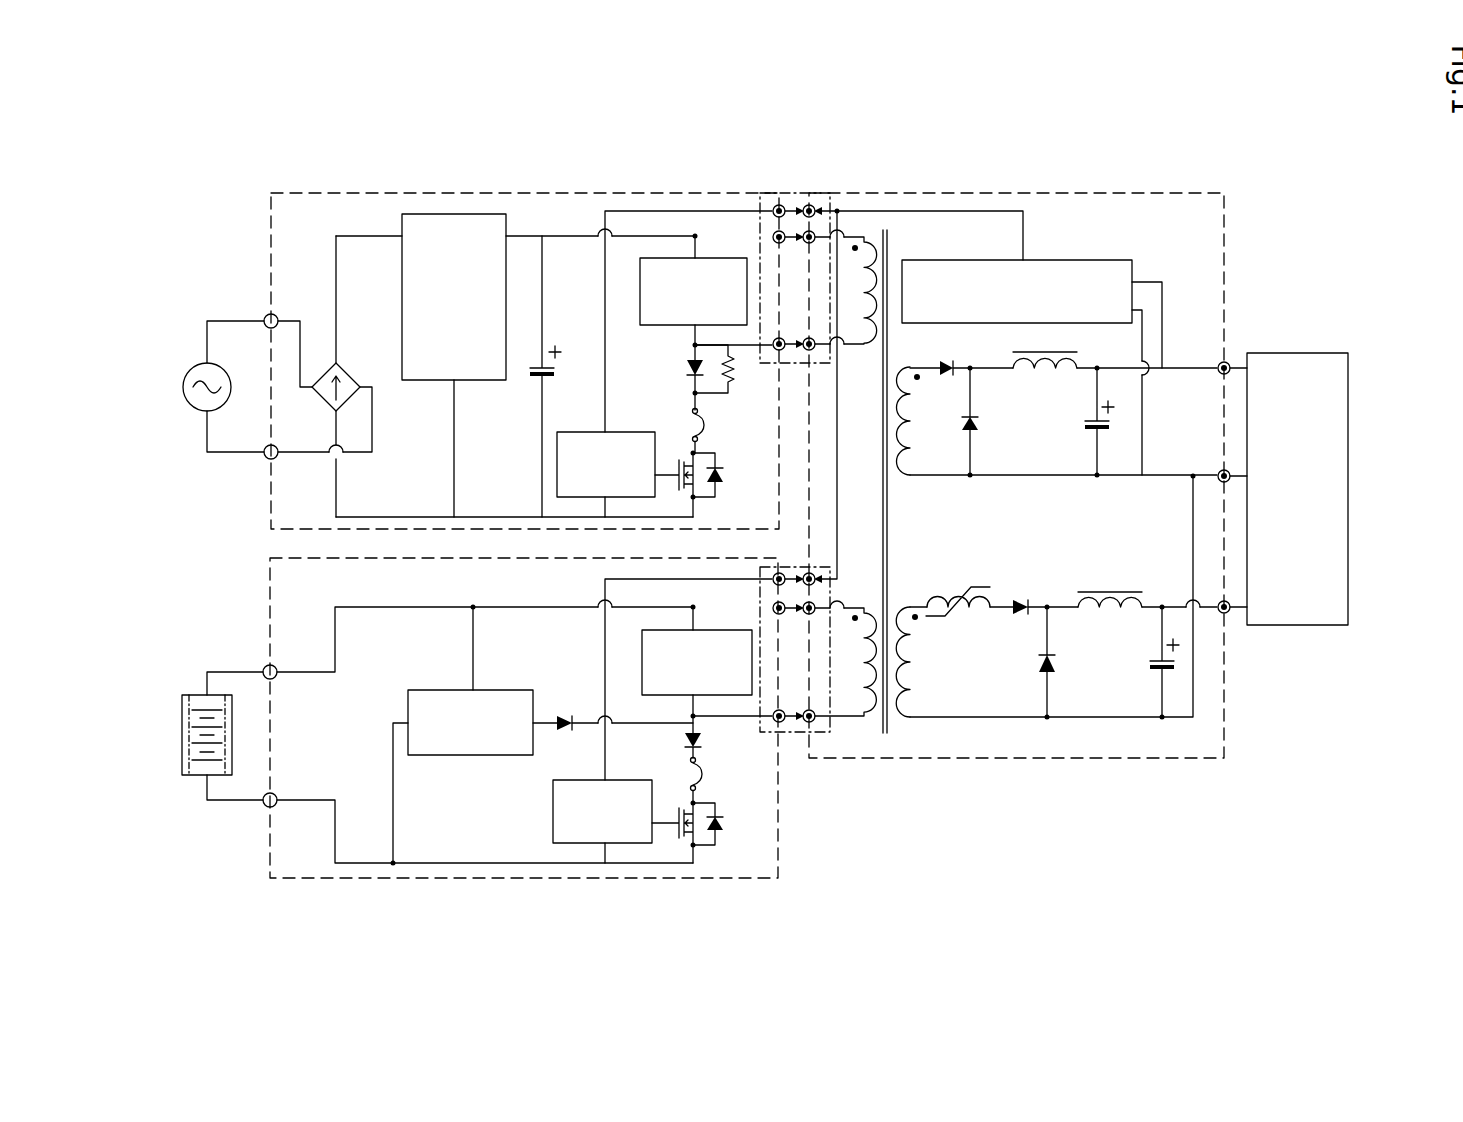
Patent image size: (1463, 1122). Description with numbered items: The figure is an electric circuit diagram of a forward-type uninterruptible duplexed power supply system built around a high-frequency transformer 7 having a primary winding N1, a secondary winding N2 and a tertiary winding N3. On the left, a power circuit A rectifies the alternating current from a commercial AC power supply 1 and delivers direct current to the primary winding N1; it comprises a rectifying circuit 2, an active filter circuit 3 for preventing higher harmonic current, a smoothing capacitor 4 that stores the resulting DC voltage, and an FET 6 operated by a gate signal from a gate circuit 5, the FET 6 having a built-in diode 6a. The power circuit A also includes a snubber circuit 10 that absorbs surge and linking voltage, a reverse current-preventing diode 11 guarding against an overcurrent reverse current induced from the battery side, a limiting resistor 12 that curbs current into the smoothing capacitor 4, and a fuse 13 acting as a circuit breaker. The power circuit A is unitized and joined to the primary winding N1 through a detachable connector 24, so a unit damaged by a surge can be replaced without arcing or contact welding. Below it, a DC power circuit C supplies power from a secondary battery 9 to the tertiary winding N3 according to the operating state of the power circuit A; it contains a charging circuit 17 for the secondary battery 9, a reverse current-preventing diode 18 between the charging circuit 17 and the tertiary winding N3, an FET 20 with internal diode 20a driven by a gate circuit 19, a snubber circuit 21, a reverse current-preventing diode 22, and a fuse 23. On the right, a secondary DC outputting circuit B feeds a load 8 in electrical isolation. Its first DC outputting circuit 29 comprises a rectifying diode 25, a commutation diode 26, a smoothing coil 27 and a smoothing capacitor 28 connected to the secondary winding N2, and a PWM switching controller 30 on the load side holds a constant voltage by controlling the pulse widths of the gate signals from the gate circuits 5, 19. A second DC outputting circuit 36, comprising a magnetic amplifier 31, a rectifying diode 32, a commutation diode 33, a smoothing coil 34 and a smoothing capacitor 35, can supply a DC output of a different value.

The commercial AC power supply 1 is at (200, 366).
The rectifying circuit 2 is at (345, 378).
The active filter circuit 3 is at (483, 380).
The smoothing capacitor 4 is at (556, 376).
The gate circuit 5 is at (622, 432).
The FET 6 is at (675, 454).
The built-in diode of the FET 6a is at (722, 481).
The high-frequency transformer 7 is at (908, 240).
The load 8 is at (1347, 398).
The secondary battery 9 is at (193, 679).
The snubber circuit 10 is at (712, 258).
The reverse current-preventing diode 11 is at (686, 360).
The limiting resistor 12 is at (736, 368).
The fuse 13 is at (700, 427).
The charging circuit 17 is at (417, 695).
The reverse current-preventing diode 18 is at (570, 714).
The gate circuit 19 is at (553, 810).
The FET 20 is at (668, 796).
The internal diode of the FET 20a is at (722, 828).
The snubber circuit 21 is at (641, 676).
The reverse current-preventing diode 22 is at (702, 740).
The fuse 23 is at (698, 775).
The connector 24 is at (798, 196).
The rectifying diode 25 is at (946, 373).
The commutation diode 26 is at (976, 425).
The smoothing coil 27 is at (1049, 381).
The smoothing capacitor 28 is at (1110, 431).
The first DC outputting circuit 29 is at (1197, 345).
The PWM switching controller 30 is at (1085, 262).
The magnetic amplifier 31 is at (994, 576).
The rectifying diode 32 is at (1030, 594).
The commutation diode 33 is at (1040, 661).
The smoothing coil 34 is at (1113, 590).
The smoothing capacitor 35 is at (1155, 662).
The second DC outputting circuit 36 is at (1150, 740).
The power circuit A is at (447, 190).
The secondary DC outputting circuit B is at (1047, 193).
The DC power circuit C is at (303, 878).
The primary winding N1 is at (866, 238).
The secondary winding N2 is at (908, 480).
The tertiary winding N3 is at (870, 728).